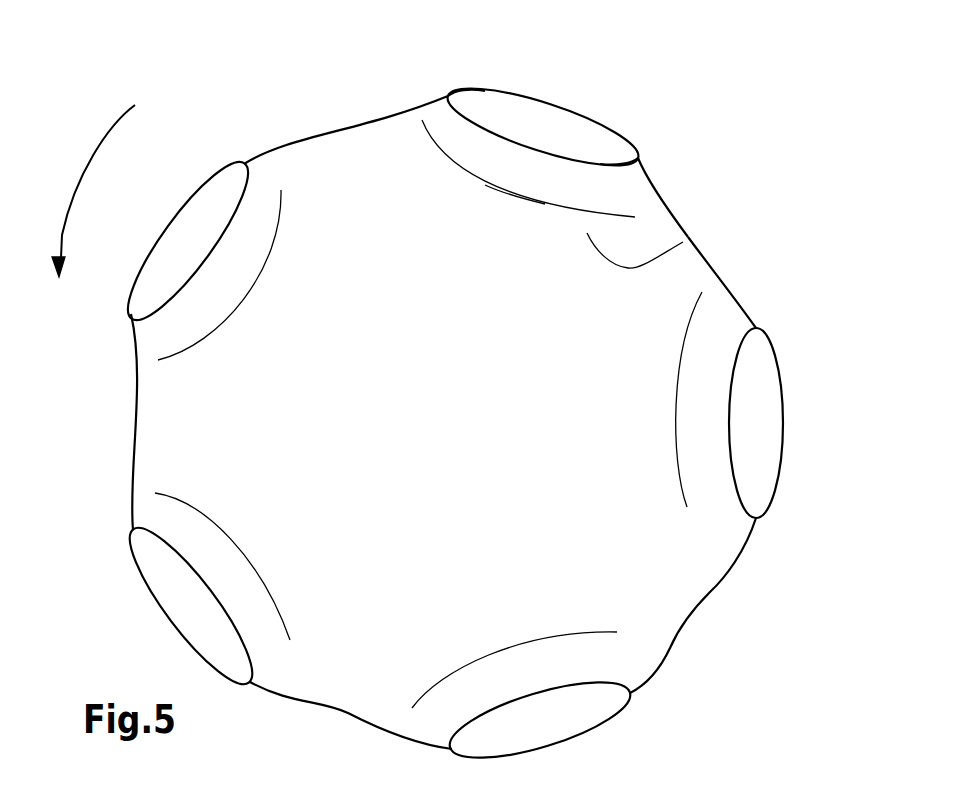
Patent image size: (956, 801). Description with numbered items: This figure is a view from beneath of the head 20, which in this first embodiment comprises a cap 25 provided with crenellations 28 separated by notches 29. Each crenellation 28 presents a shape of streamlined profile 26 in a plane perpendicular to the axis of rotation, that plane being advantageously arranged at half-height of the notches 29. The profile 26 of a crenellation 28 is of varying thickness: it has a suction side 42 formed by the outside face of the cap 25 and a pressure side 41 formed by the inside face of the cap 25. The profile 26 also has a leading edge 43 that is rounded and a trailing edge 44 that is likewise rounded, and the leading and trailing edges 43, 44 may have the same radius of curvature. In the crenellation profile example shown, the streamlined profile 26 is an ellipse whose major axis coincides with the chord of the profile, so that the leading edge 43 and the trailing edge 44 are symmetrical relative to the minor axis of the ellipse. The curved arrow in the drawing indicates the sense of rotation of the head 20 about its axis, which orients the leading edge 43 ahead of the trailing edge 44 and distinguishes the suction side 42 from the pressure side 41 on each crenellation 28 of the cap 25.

The head 20 is at (672, 210).
The cap 25 is at (683, 242).
The streamlined profile 26 is at (554, 142).
The crenellation 28 is at (468, 133).
The notch 29 is at (718, 262).
The pressure side 41 is at (515, 147).
The suction side 42 is at (513, 90).
The leading edge 43 is at (447, 97).
The trailing edge 44 is at (639, 160).